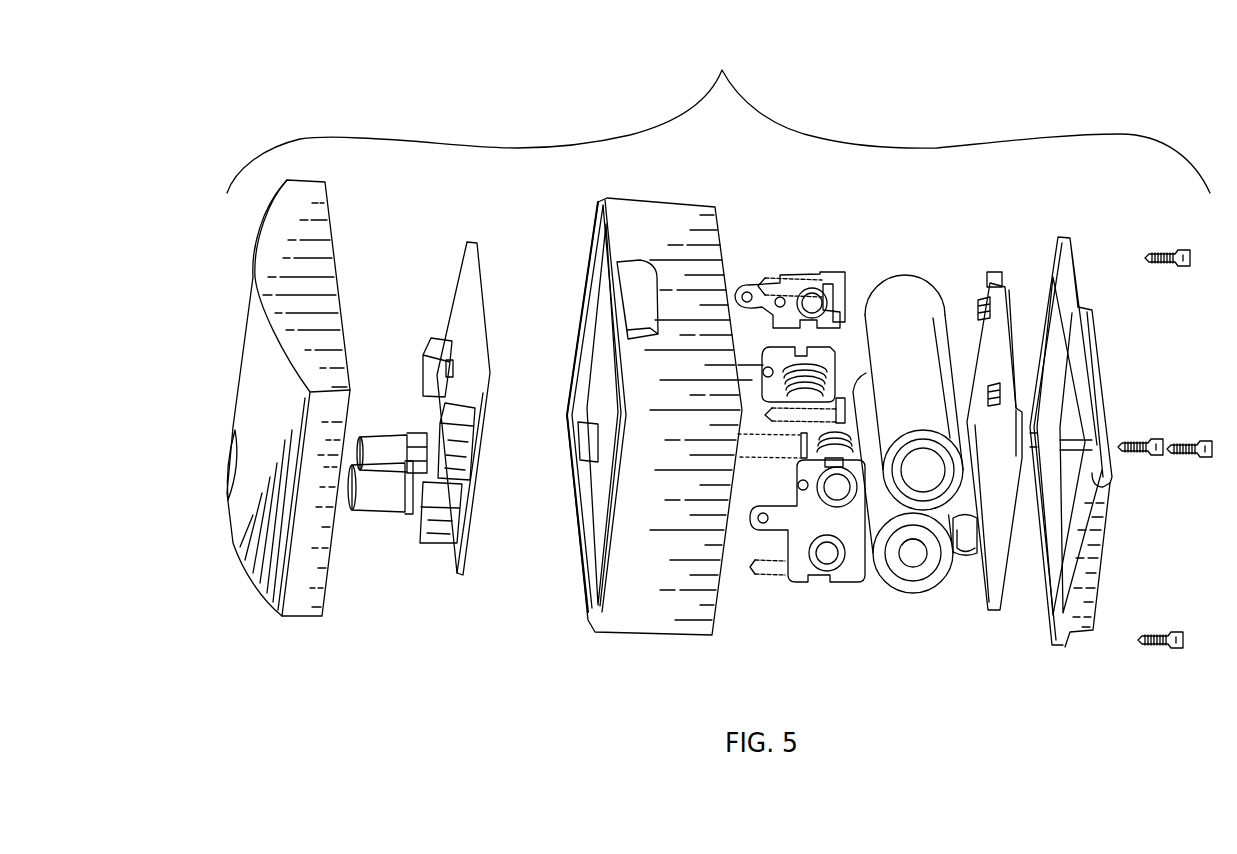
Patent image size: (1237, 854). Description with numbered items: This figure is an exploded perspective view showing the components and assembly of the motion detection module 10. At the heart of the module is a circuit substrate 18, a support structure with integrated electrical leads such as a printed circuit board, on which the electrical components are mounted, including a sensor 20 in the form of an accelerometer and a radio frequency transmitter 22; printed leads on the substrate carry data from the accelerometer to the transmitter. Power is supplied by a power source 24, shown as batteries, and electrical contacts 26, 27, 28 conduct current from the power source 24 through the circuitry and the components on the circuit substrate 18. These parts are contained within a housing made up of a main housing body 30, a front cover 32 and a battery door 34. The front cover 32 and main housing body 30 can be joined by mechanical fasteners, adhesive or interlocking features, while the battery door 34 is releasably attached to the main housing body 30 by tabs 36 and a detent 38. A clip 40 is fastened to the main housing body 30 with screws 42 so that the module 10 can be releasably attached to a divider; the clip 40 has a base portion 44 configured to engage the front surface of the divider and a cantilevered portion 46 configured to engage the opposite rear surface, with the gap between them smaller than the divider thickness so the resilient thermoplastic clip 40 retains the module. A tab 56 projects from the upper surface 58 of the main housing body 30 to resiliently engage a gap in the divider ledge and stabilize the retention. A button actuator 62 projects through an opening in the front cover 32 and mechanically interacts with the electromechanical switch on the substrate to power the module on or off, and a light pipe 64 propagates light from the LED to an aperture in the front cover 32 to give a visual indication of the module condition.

The motion detection module 10 is at (718, 117).
The circuit substrate 18 is at (475, 287).
The sensor 20 is at (467, 443).
The radio frequency transmitter 22 is at (447, 543).
The power source 24 is at (910, 297).
The electrical contact 26 is at (798, 273).
The electrical contact 27 is at (798, 563).
The electrical contact 28 is at (827, 357).
The main housing body 30 is at (632, 620).
The front cover 32 is at (252, 535).
The battery door 34 is at (992, 608).
The tabs 36 is at (985, 297).
The detent 38 is at (967, 550).
The clip 40 is at (1098, 555).
The screws 42 is at (1168, 248).
The base portion 44 is at (1002, 295).
The cantilevered portion 46 is at (1095, 392).
The tab 56 is at (643, 293).
The upper surface 58 is at (637, 375).
The button actuator 62 is at (375, 505).
The light pipe 64 is at (385, 448).